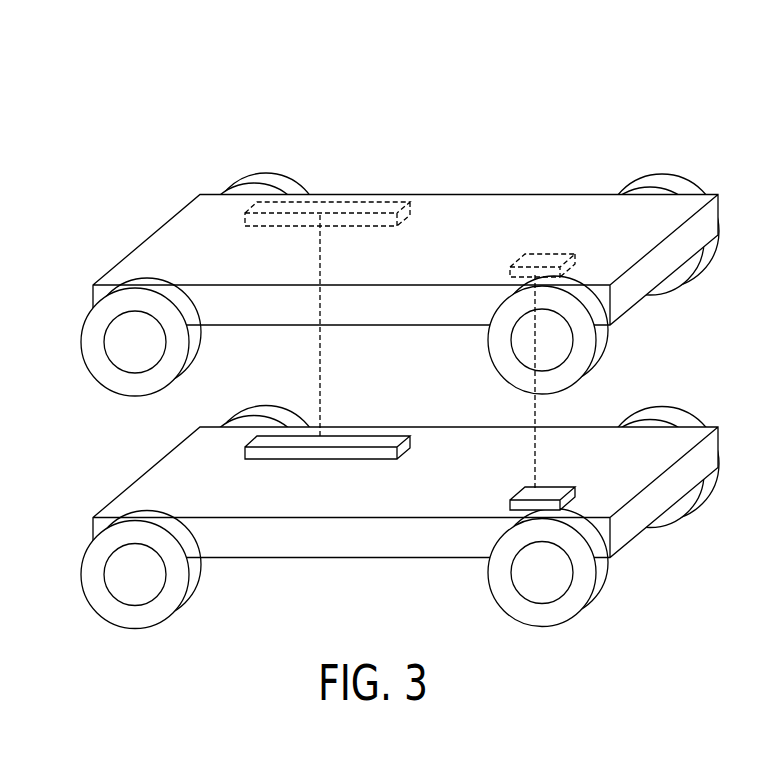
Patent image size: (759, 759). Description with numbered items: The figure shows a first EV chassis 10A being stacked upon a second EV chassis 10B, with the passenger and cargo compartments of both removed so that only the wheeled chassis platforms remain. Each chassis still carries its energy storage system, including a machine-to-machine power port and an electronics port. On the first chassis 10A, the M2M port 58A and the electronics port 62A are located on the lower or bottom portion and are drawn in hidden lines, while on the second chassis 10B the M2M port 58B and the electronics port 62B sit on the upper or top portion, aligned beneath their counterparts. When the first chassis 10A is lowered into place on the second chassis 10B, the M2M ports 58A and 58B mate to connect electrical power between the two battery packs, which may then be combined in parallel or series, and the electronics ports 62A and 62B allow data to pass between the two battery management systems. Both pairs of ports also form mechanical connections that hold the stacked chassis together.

The first chassis 10A is at (597, 173).
The second chassis 10B is at (647, 400).
The electronics port 62A is at (357, 198).
The electronics port 62B is at (305, 464).
The M2M port 58A is at (547, 253).
The M2M port 58B is at (507, 504).